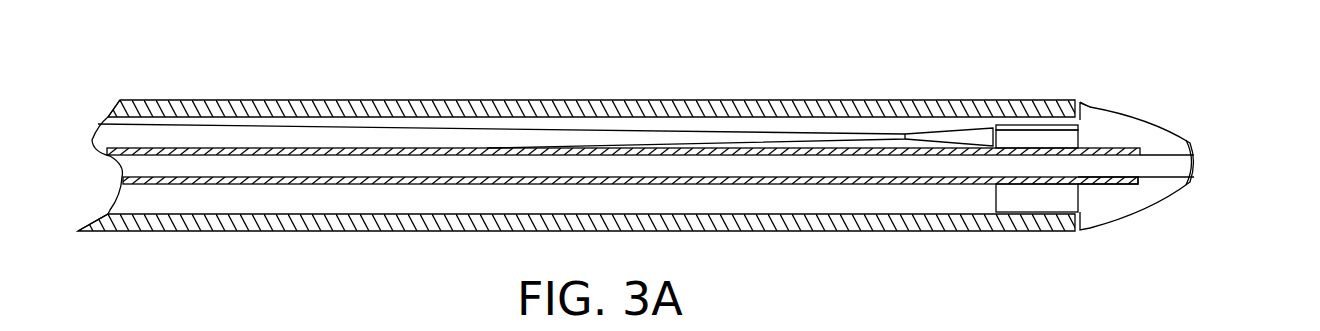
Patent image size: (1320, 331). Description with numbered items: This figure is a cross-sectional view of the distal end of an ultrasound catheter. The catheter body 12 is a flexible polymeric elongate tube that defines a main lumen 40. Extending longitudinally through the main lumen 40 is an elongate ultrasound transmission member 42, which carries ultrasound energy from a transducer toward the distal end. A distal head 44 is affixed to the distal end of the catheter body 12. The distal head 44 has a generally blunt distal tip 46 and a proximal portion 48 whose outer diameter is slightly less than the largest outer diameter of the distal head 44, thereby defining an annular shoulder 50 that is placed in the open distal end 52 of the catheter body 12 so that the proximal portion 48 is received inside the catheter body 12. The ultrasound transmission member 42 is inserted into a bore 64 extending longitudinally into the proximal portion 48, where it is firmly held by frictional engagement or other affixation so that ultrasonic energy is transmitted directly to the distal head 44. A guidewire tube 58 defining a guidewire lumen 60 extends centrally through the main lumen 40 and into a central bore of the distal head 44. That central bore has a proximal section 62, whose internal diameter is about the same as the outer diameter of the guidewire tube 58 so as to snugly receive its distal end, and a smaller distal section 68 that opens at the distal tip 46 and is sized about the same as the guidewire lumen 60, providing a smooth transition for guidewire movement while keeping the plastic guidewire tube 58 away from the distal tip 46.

The catheter body 12 is at (425, 101).
The main lumen 40 is at (203, 207).
The ultrasound transmission member 42 is at (593, 135).
The distal head 44 is at (1107, 133).
The distal tip 46 is at (1190, 147).
The proximal portion 48 is at (1037, 202).
The annular shoulder 50 is at (1090, 107).
The open distal end 52 is at (1067, 102).
The guidewire tube 58 is at (173, 147).
The guidewire lumen 60 is at (258, 167).
The proximal section 62 is at (1080, 185).
The bore 64 is at (1010, 127).
The distal section 68 is at (1175, 180).